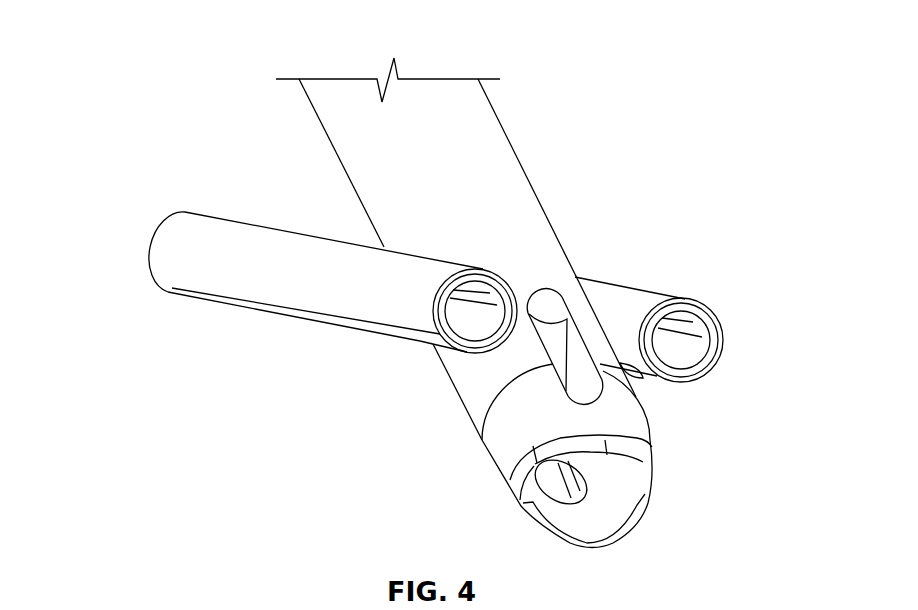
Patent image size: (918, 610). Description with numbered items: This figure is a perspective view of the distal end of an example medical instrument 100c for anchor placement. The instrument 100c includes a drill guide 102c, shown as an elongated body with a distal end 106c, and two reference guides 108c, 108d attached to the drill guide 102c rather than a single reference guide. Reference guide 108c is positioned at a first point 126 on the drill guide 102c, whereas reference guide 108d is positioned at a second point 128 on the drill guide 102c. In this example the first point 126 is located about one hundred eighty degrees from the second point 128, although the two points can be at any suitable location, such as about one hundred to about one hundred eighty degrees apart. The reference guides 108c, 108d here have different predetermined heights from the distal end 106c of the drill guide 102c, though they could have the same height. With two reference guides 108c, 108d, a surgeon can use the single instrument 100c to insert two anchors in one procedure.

The instrument 100c is at (190, 56).
The drill guide 102c is at (483, 140).
The distal end 106c is at (603, 541).
The reference guide 108c is at (251, 295).
The reference guide 108d is at (688, 298).
The first point 126 is at (432, 347).
The second point 128 is at (641, 380).